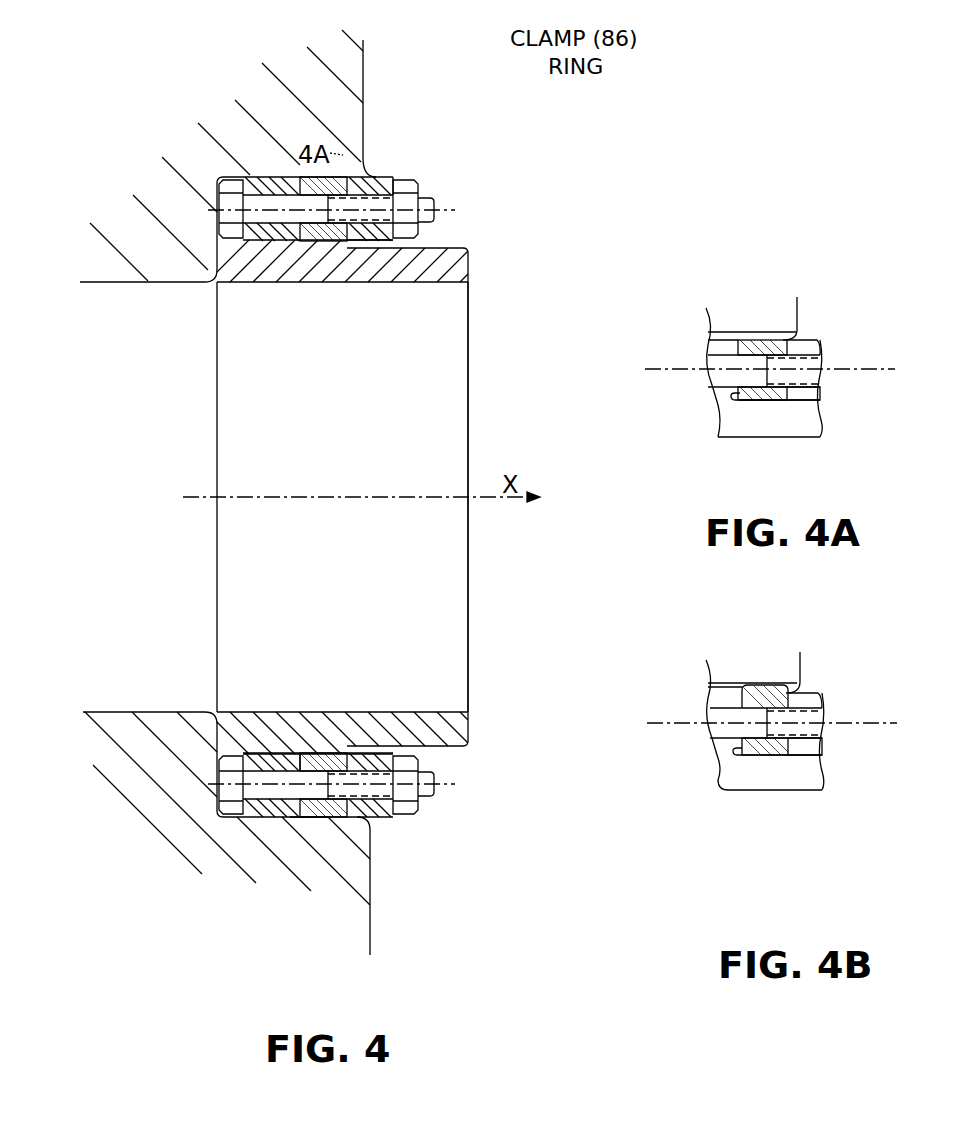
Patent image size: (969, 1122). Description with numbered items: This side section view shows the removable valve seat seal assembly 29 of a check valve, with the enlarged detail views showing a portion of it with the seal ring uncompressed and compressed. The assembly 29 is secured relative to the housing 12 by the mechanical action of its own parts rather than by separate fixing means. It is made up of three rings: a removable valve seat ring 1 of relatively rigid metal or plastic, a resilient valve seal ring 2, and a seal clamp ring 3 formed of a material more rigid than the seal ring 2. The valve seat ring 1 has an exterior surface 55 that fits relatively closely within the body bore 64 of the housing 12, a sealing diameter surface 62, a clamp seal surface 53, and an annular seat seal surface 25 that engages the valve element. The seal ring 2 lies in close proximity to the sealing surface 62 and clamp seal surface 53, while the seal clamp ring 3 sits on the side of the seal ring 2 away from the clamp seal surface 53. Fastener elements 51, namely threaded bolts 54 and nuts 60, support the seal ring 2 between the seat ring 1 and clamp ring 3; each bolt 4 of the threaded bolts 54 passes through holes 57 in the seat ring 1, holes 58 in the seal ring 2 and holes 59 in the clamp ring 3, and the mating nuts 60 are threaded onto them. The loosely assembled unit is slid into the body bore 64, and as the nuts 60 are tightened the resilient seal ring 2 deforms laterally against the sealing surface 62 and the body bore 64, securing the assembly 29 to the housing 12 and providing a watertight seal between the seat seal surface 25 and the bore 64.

In FIG. 4, the valve seat ring 1 is at (327, 273).
In FIG. 4A, the valve seat ring 1 is at (723, 395).
In FIG. 4B, the valve seat ring 1 is at (728, 747).
In FIG. 4, the valve seal ring 2 is at (332, 176).
In FIG. 4A, the valve seal ring 2 is at (765, 340).
In FIG. 4B, the valve seal ring 2 is at (768, 690).
In FIG. 4, the seal clamp ring 3 is at (380, 177).
In FIG. 4A, the seal clamp ring 3 is at (810, 347).
In FIG. 4B, the seal clamp ring 3 is at (813, 698).
In FIG. 4, the bolt 4 is at (233, 815).
In FIG. 4, the housing 12 is at (357, 64).
In FIG. 4, the annular seat seal surface 25 is at (470, 730).
In FIG. 4, the valve seat seal assembly 29 is at (125, 542).
In FIG. 4, the fastener elements 51 is at (260, 222).
In FIG. 4, the clamp seal surface 53 is at (302, 753).
In FIG. 4A, the threaded bolts 54 is at (722, 365).
In FIG. 4B, the threaded bolts 54 is at (723, 718).
In FIG. 4, the exterior surface 55 is at (287, 817).
In FIG. 4, the holes 57 is at (273, 753).
In FIG. 4, the holes 58 is at (313, 753).
In FIG. 4, the holes 59 is at (228, 237).
In FIG. 4, the nuts 60 is at (408, 187).
In FIG. 4, the sealing diameter surface 62 is at (330, 753).
In FIG. 4A, the sealing diameter surface 62 is at (740, 332).
In FIG. 4, the body bore 64 is at (305, 820).
In FIG. 4A, the body bore 64 is at (778, 402).